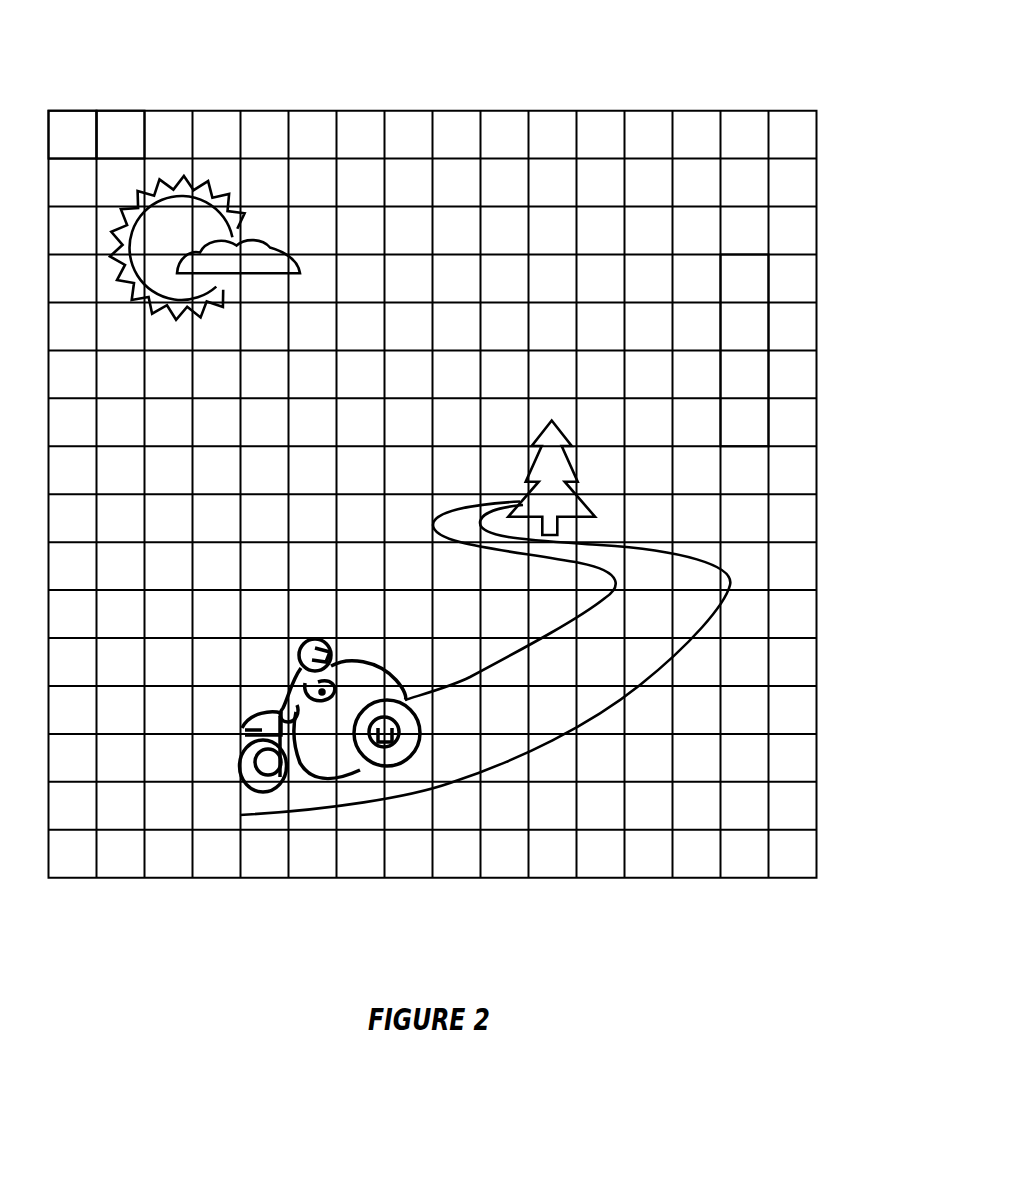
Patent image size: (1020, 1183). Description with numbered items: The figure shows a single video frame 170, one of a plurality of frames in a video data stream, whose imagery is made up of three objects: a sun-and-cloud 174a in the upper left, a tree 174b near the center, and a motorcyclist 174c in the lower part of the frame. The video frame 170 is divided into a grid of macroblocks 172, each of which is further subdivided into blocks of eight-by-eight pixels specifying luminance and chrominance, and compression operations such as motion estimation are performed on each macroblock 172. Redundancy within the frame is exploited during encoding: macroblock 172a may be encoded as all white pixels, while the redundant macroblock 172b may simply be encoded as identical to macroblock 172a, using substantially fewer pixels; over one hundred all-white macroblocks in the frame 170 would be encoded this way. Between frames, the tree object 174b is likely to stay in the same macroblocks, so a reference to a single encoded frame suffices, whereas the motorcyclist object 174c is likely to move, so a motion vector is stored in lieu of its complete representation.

The video frame 170 is at (426, 80).
The macroblock 172 is at (755, 280).
The macroblock 172a is at (55, 120).
The redundant macroblock 172b is at (133, 120).
The sun-and-cloud object 174a is at (227, 200).
The tree object 174b is at (558, 424).
The motorcyclist object 174c is at (356, 745).